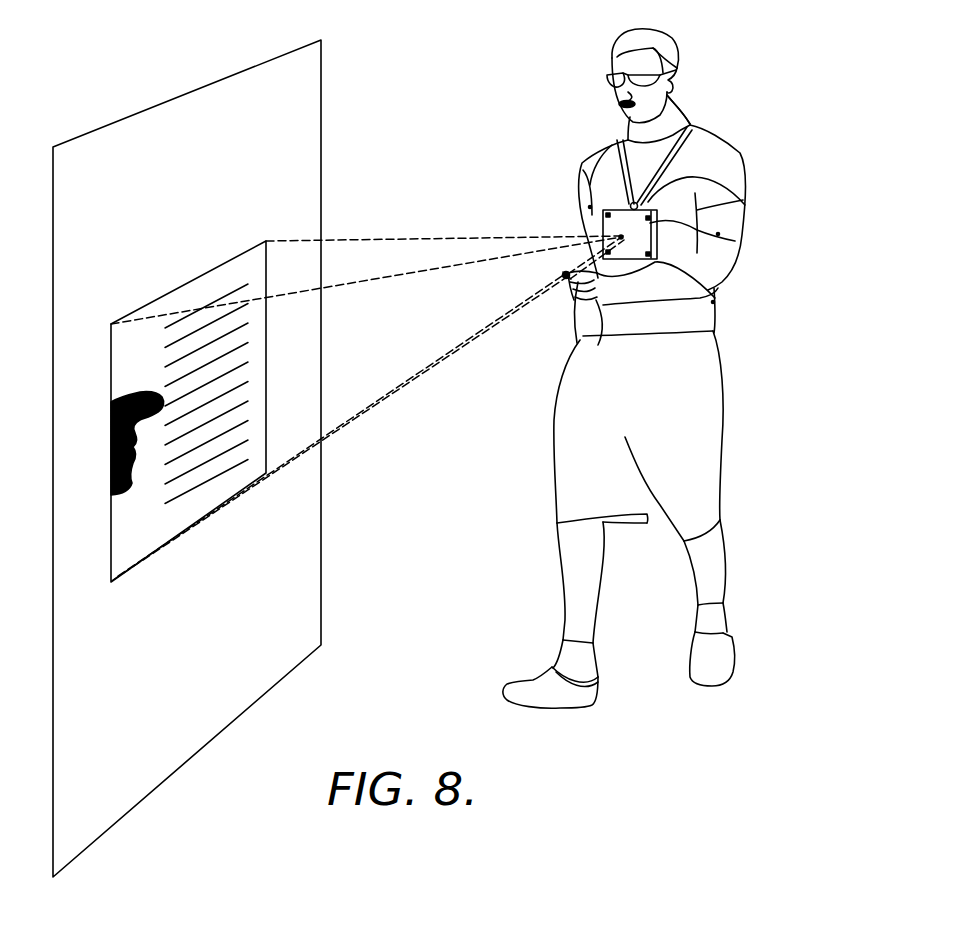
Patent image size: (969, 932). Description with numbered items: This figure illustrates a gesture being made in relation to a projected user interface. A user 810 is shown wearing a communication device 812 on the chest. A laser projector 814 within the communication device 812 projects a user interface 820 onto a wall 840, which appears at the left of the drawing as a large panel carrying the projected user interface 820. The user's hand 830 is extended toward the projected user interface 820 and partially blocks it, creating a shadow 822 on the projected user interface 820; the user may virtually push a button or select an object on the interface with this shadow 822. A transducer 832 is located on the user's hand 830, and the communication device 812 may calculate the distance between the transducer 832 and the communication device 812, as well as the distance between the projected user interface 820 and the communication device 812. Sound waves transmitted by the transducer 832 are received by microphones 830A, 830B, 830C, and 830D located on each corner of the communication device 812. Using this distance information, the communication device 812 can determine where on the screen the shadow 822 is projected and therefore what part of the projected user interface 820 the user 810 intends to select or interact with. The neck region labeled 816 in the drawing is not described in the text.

The user 810 is at (744, 182).
The communication device 812 is at (740, 139).
The laser projector 814 is at (590, 178).
The neck 816 is at (706, 109).
The user interface 820 is at (188, 282).
The shadow 822 is at (127, 396).
The user's hand 830 is at (582, 336).
The microphone 830A is at (713, 302).
The microphone 830B is at (594, 232).
The microphone 830C is at (590, 207).
The microphone 830D is at (718, 234).
The transducer 832 is at (563, 277).
The wall 840 is at (213, 92).